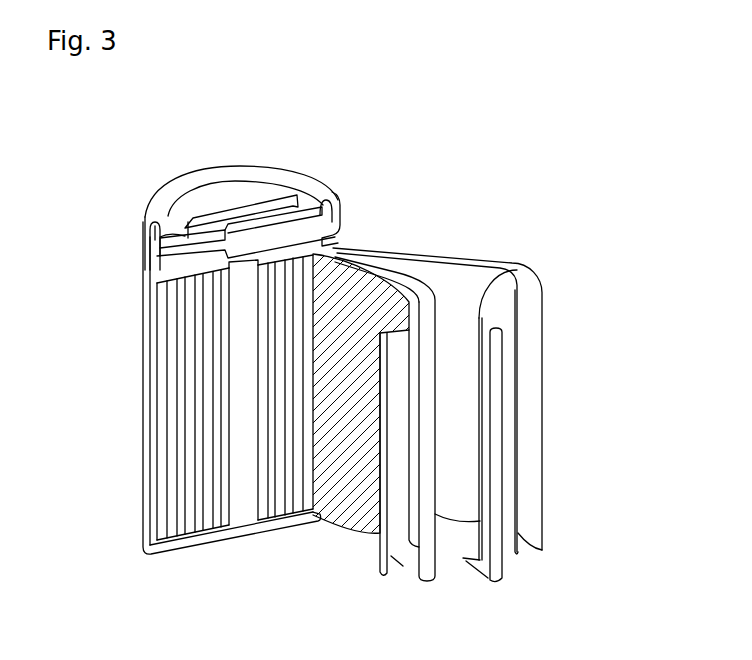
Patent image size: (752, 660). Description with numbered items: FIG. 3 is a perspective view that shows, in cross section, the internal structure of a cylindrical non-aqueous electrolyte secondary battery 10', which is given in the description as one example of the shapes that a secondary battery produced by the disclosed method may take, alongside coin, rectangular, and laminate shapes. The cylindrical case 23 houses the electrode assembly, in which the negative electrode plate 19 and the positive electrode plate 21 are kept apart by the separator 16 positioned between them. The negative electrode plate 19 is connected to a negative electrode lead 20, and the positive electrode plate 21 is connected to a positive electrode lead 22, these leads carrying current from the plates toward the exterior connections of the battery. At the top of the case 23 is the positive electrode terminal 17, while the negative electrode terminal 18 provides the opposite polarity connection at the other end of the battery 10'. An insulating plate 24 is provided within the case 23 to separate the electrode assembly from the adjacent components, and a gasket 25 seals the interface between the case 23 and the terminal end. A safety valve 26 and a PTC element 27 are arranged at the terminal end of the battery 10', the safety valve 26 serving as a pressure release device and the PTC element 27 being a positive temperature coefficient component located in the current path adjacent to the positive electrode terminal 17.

The cylindrical non-aqueous electrolyte secondary battery 10' is at (306, 297).
The separator 16 is at (447, 262).
The positive electrode terminal 17 is at (218, 192).
The negative electrode terminal 18 is at (208, 547).
The negative electrode plate 19 is at (508, 366).
The negative electrode lead 20 is at (495, 458).
The positive electrode plate 21 is at (395, 560).
The positive electrode lead 22 is at (340, 236).
The case 23 is at (142, 407).
The insulating plate 24 is at (157, 268).
The gasket 25 is at (148, 205).
The safety valve 26 is at (248, 217).
The PTC element 27 is at (296, 197).